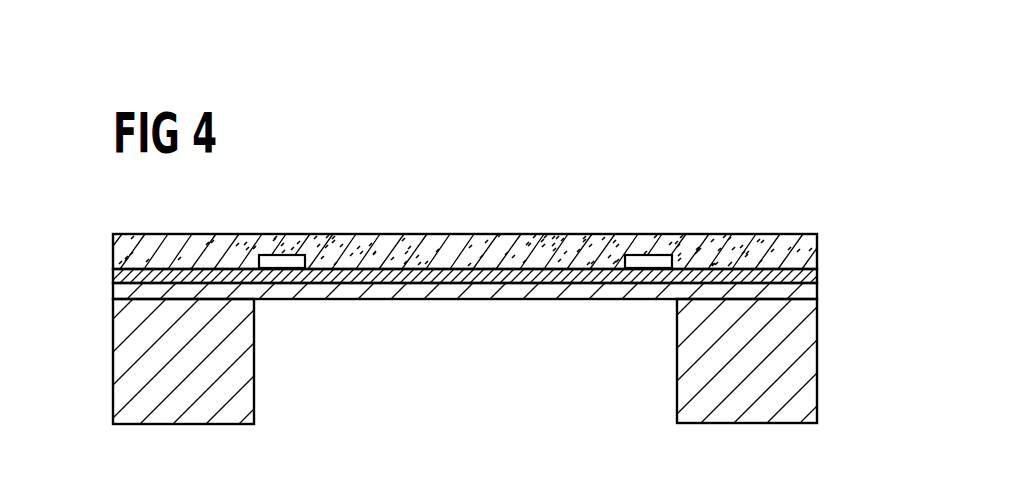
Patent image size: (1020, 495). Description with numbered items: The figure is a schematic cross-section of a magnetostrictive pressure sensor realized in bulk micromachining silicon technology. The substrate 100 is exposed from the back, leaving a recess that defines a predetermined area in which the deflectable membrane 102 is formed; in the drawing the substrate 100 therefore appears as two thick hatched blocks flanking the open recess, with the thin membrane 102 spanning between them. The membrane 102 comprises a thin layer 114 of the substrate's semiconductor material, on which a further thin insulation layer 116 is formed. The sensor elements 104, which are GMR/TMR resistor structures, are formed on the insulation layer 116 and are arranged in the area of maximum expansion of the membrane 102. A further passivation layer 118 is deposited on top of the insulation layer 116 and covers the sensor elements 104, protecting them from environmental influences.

The substrate 100 is at (805, 370).
The deflectable membrane 102 is at (428, 333).
The sensor elements 104 is at (282, 257).
The thin layer of semiconductor material 114 is at (818, 288).
The insulation layer 116 is at (818, 270).
The passivation layer 118 is at (818, 241).